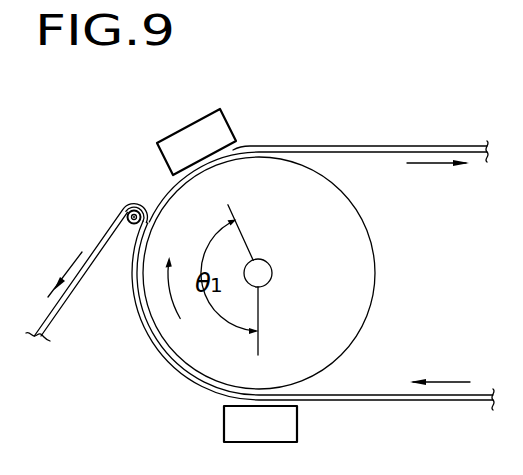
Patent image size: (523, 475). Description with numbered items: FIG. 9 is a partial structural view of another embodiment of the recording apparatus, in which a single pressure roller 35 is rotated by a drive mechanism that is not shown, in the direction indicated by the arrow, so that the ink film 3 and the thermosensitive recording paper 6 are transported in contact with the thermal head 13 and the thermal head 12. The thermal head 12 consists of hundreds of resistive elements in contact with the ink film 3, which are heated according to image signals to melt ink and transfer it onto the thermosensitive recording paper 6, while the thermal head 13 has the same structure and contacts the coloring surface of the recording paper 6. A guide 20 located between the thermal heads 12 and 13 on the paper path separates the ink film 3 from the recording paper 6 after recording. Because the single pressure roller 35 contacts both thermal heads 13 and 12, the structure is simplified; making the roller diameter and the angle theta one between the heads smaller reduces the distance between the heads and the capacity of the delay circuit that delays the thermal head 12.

The ink film 3 is at (398, 402).
The thermosensitive recording paper 6 is at (370, 394).
The thermal head 12 is at (178, 140).
The thermal head 13 is at (233, 426).
The guide 20 is at (128, 210).
The pressure roller 35 is at (360, 281).